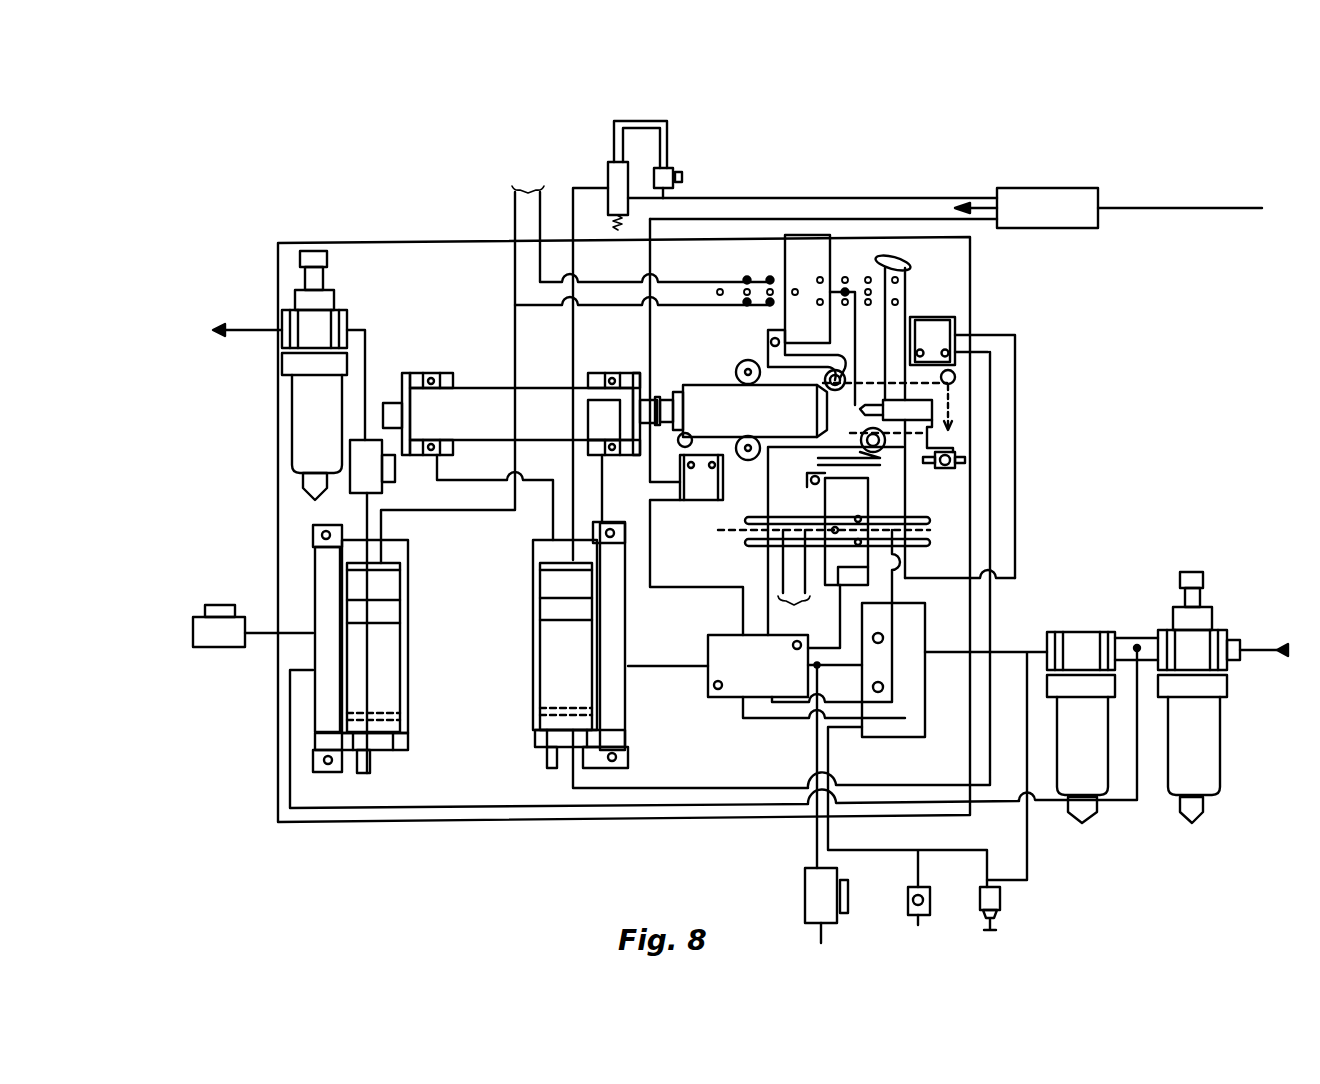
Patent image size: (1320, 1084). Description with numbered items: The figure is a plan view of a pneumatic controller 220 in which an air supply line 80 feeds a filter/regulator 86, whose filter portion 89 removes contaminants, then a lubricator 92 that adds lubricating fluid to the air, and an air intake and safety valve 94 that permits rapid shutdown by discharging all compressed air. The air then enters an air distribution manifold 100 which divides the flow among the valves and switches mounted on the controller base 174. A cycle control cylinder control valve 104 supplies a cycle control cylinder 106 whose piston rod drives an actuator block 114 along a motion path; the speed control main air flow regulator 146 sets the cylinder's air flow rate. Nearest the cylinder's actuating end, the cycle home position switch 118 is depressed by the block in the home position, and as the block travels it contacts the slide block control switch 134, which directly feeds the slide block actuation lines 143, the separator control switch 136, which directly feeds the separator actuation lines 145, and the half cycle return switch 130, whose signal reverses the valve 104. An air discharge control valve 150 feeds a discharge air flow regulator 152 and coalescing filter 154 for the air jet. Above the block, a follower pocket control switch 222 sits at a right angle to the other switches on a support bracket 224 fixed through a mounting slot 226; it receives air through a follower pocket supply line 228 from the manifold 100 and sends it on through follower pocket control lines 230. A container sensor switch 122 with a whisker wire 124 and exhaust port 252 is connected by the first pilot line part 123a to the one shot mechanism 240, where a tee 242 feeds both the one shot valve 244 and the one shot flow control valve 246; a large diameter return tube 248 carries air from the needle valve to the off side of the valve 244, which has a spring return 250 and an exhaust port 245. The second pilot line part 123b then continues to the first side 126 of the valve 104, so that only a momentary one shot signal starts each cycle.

The air supply line 80 is at (1252, 647).
The filter/regulator 86 is at (1137, 695).
The filter portion 89 is at (1206, 754).
The lubricator 92 is at (1095, 754).
The air intake and safety valve 94 is at (908, 728).
The air distribution manifold 100 is at (776, 682).
The cycle control cylinder control valve 104 is at (547, 665).
The cycle control cylinder 106 is at (490, 424).
The actuator block 114 is at (771, 422).
The cycle home position switch 118 is at (705, 485).
The container sensor switch 122 is at (1064, 203).
The first part of pilot line 123a is at (798, 197).
The second part of pilot line 123b is at (576, 352).
The wire 124 is at (1178, 210).
The first side of first air distribution valve 126 is at (572, 558).
The half cycle return switch 130 is at (937, 327).
The slide block control switch 134 is at (805, 253).
The separator control switch 136 is at (843, 502).
The slide block actuation lines 143 is at (640, 235).
The separator actuation lines 145 is at (824, 571).
The speed control main air flow regulator 146 is at (218, 640).
The air discharge control valve 150 is at (385, 667).
The discharge air flow regulator 152 is at (372, 488).
The coalescing filter 154 is at (336, 432).
The controller base 174 is at (543, 822).
The pneumatic controller 220 is at (1172, 438).
The follower pocket control switch 222 is at (932, 412).
The support bracket 224 is at (935, 442).
The mounting slot 226 is at (960, 465).
The follower pocket supply line 228 is at (904, 485).
The follower pocket control lines 230 is at (918, 262).
The one shot mechanism 240 is at (649, 178).
The tee 242 is at (667, 199).
The one shot valve 244 is at (618, 173).
The exhaust port 245 is at (632, 182).
The one shot flow control valve 246 is at (665, 180).
The return tube 248 is at (638, 122).
The spring return 250 is at (623, 230).
The exhaust port 252 is at (978, 207).